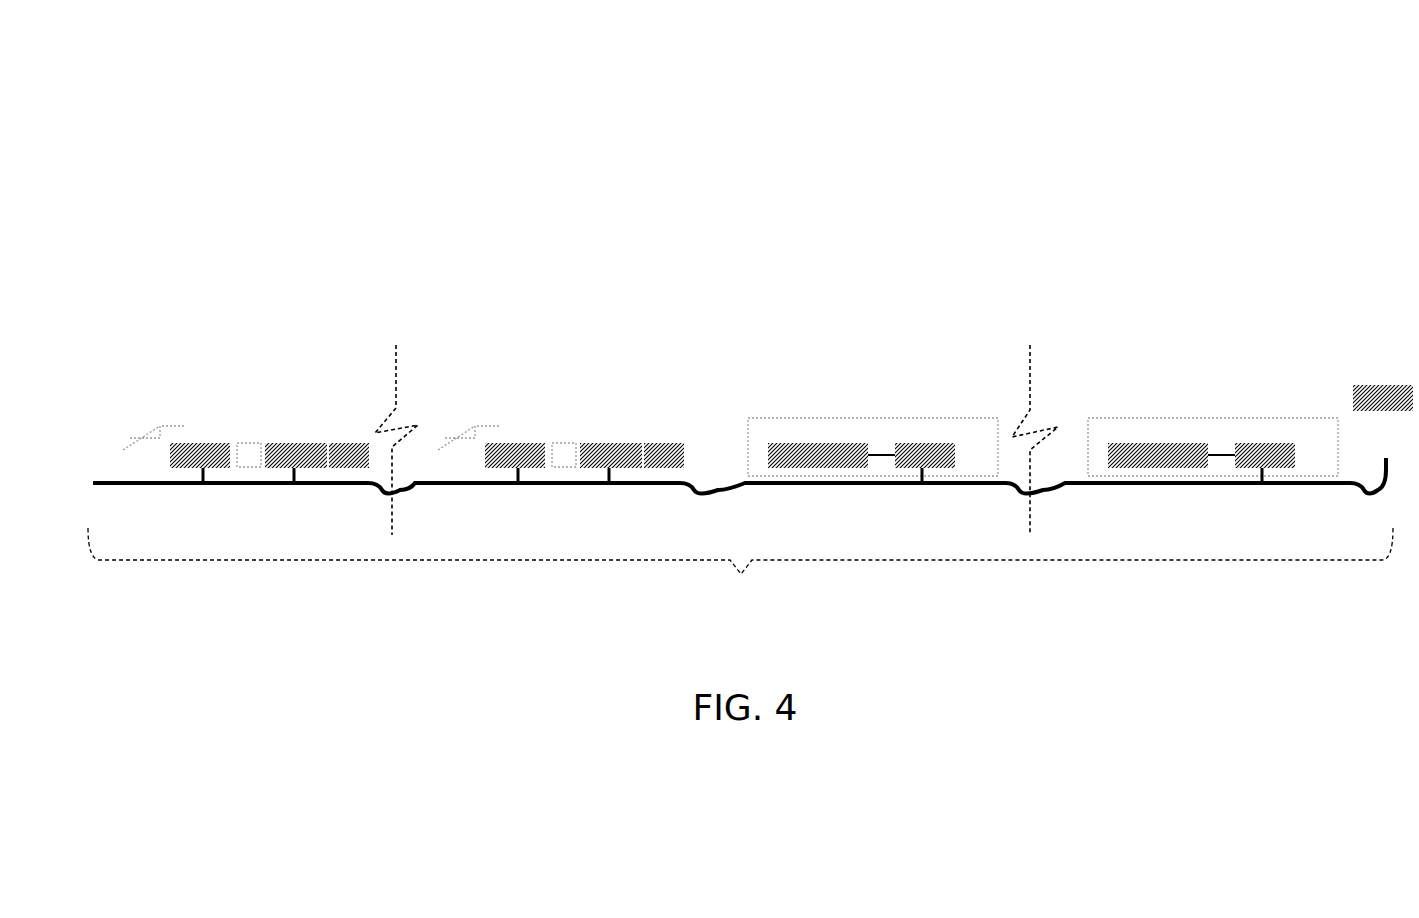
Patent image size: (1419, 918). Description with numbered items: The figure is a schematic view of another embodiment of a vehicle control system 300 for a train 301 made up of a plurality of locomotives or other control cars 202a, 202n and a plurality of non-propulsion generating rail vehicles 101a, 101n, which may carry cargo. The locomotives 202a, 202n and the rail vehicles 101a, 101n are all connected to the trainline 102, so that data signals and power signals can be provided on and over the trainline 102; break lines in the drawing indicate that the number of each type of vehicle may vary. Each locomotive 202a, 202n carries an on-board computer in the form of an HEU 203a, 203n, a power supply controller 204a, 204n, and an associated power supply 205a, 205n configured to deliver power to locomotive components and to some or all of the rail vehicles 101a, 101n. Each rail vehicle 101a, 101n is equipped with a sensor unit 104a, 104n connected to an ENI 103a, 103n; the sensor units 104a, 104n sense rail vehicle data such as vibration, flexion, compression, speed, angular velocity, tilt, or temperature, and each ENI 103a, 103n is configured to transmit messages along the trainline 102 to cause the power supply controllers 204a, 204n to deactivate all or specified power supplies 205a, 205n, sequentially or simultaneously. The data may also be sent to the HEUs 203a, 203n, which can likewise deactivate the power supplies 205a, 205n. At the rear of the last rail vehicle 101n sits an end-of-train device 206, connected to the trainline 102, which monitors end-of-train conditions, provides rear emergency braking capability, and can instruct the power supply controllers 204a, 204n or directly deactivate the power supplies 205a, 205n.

The vehicle control system 300 is at (735, 45).
The train 301 is at (740, 577).
The locomotive 202a is at (248, 418).
The locomotive 202n is at (563, 418).
The on-board computer 203a is at (193, 438).
The on-board computer 203n is at (508, 438).
The power supply controller 204a is at (290, 438).
The power supply controller 204n is at (605, 438).
The power supply 205a is at (363, 438).
The power supply 205n is at (678, 438).
The trainline 102 is at (705, 478).
The rail vehicle 101a is at (880, 412).
The rail vehicle 101n is at (1216, 412).
The sensor unit 104a is at (826, 438).
The sensor unit 104n is at (1162, 438).
The ENI 103a is at (924, 438).
The ENI 103n is at (1262, 438).
The end-of-train device 206 is at (1371, 380).